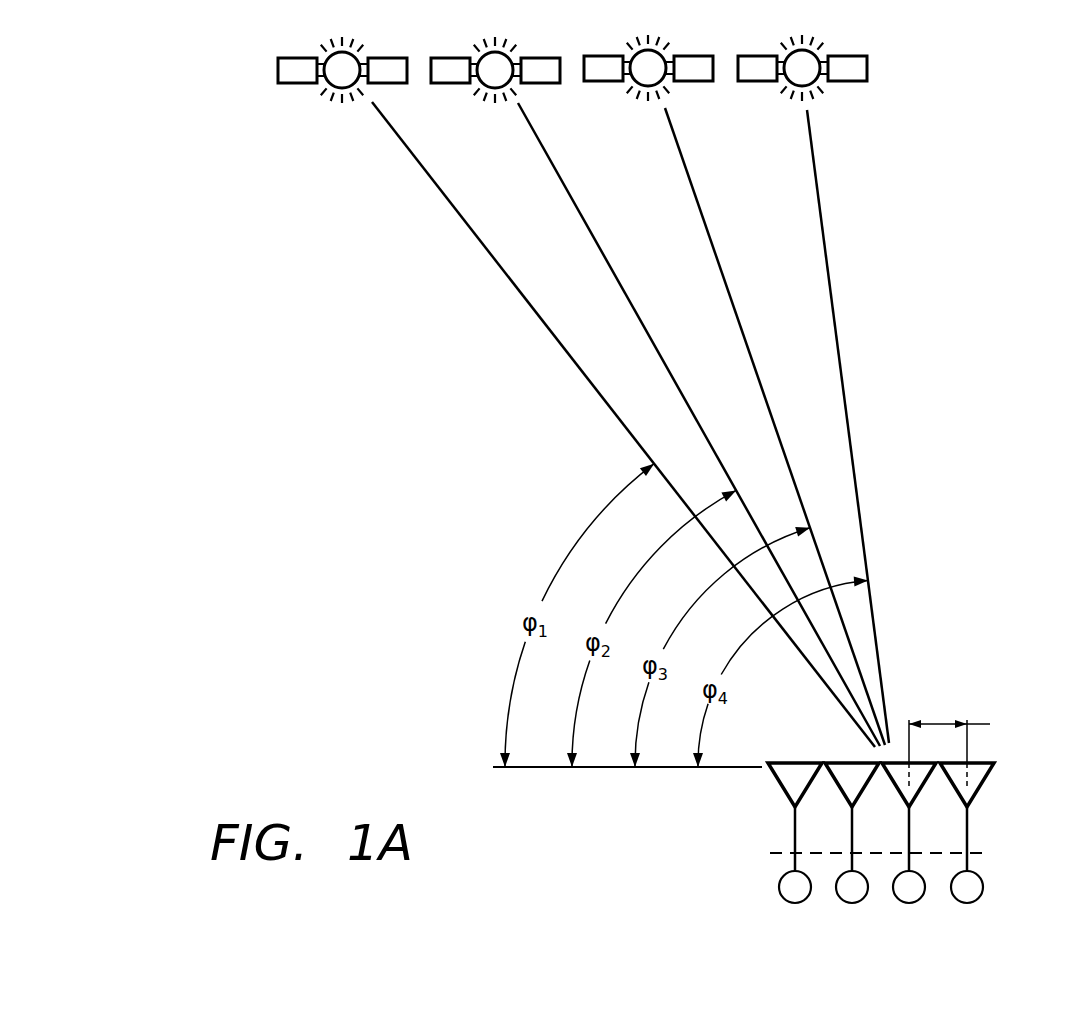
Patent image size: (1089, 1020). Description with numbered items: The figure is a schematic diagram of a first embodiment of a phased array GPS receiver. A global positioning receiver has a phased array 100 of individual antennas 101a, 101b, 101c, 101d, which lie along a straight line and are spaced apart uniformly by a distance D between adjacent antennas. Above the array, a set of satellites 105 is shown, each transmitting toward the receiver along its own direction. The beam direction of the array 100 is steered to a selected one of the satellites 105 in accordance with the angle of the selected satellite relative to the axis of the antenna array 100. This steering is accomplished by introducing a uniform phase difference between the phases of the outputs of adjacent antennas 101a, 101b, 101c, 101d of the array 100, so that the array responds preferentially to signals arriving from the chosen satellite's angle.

The phased array 100 is at (870, 732).
The antenna 101a is at (790, 793).
The antenna 101b is at (841, 798).
The antenna 101c is at (915, 794).
The antenna 101d is at (974, 793).
The satellites 105 is at (323, 123).